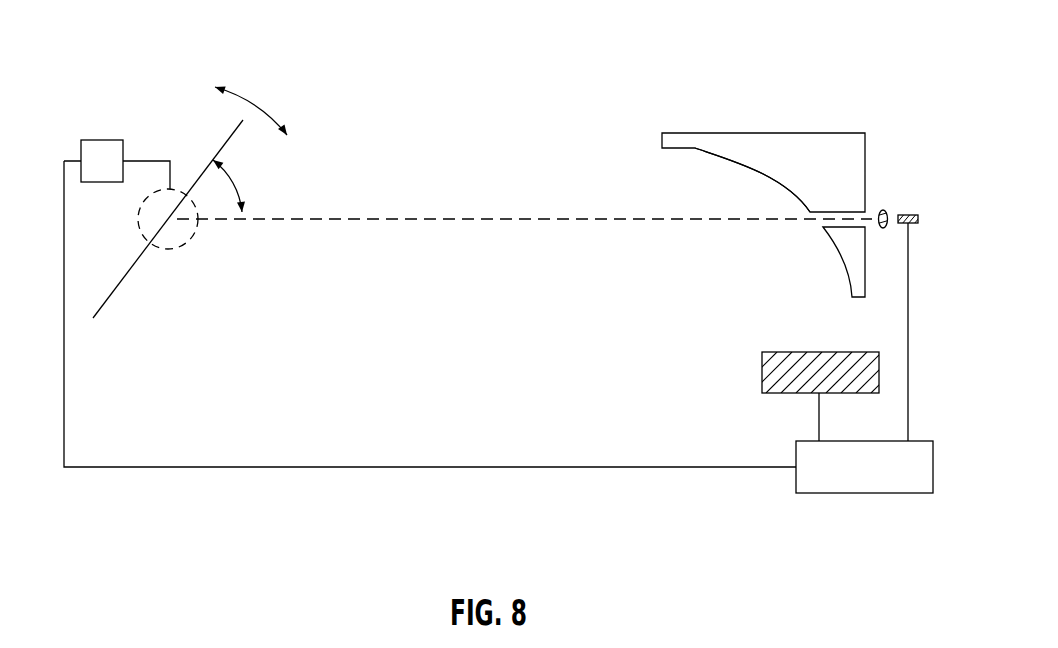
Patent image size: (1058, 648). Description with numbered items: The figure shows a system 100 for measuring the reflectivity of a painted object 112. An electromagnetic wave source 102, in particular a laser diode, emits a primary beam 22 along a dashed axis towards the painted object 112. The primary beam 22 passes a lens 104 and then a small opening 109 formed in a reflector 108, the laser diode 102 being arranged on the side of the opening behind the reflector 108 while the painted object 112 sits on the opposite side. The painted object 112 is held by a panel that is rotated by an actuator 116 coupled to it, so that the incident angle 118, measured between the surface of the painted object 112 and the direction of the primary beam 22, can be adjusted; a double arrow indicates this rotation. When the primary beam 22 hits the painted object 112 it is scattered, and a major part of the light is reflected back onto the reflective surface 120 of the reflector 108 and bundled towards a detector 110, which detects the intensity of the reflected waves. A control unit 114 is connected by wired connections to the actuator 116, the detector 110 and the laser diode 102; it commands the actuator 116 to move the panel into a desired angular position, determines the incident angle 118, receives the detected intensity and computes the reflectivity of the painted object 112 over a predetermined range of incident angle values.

The system 100 is at (139, 40).
The electromagnetic wave source 102 is at (910, 212).
The lens 104 is at (883, 210).
The reflector 108 is at (790, 147).
The opening 109 is at (815, 241).
The detector 110 is at (762, 372).
The painted object 112 is at (227, 143).
The control unit 114 is at (866, 482).
The actuator 116 is at (103, 148).
The incident angle 118 is at (235, 180).
The reflective surface 120 is at (695, 150).
The primary beam 22 is at (490, 219).